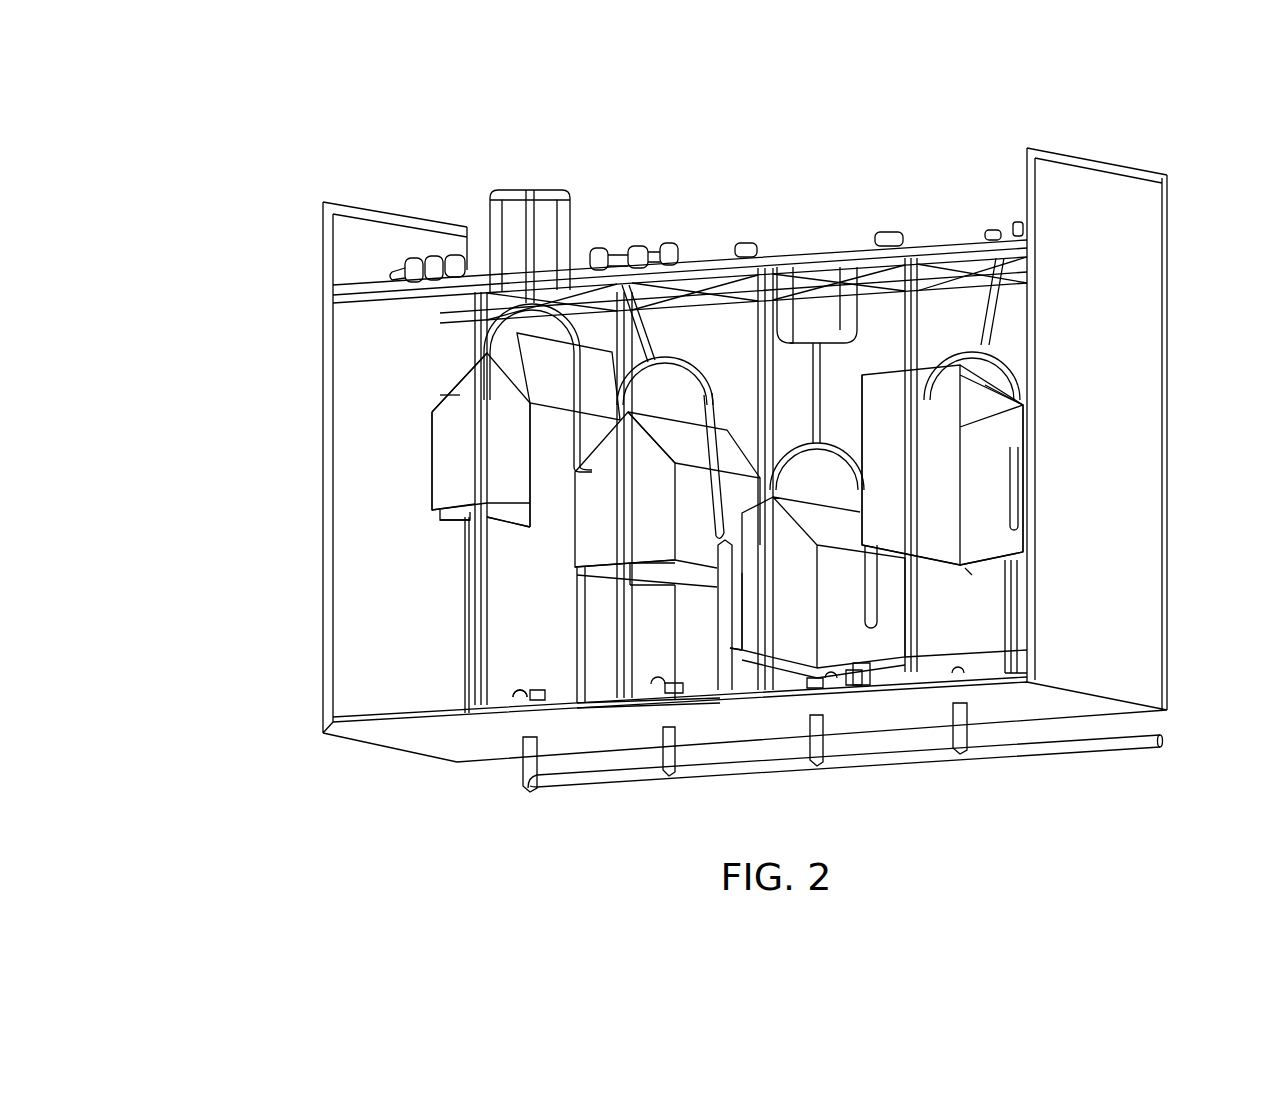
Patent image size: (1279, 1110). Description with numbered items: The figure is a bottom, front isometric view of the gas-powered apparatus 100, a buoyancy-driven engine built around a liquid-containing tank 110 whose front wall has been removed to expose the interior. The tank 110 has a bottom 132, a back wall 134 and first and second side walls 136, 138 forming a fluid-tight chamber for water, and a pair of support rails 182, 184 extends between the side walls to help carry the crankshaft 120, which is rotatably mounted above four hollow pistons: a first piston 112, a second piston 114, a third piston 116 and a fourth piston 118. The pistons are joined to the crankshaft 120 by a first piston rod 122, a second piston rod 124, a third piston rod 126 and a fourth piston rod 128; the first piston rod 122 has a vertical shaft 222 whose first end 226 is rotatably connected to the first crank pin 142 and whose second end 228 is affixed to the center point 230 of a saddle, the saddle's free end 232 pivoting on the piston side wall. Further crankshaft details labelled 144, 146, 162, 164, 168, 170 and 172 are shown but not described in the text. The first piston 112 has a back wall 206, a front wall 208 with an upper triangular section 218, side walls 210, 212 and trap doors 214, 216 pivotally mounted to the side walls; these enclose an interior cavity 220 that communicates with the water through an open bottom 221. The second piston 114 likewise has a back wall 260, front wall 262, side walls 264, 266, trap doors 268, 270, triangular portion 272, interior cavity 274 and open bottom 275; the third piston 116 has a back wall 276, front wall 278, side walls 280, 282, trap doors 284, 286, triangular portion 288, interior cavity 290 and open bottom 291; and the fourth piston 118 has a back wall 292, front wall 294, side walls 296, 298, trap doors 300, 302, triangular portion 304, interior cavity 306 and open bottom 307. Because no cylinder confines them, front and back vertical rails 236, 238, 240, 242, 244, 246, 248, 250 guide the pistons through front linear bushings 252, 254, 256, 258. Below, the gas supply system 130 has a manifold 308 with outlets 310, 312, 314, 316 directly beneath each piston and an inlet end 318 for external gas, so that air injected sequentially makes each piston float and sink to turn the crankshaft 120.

The gas-powered apparatus 100 is at (958, 93).
The tank 110 is at (318, 266).
The first piston 112 is at (425, 448).
The second piston 114 is at (593, 570).
The third piston 116 is at (884, 676).
The fourth piston 118 is at (1010, 535).
The crankshaft 120 is at (580, 212).
The first piston rod 122 is at (520, 248).
The second piston rod 124 is at (665, 358).
The third piston rod 126 is at (895, 380).
The fourth piston rod 128 is at (985, 308).
The gas supply system 130 is at (582, 790).
The bottom 132 is at (363, 738).
The back wall 134 is at (503, 698).
The first side wall 136 is at (318, 706).
The second side wall 138 is at (1166, 648).
The first crank pin 142 is at (505, 188).
The roller 144 is at (645, 252).
The bracket leg 146 is at (820, 320).
The bracket leg 162 is at (488, 208).
The bracket leg 164 is at (570, 243).
The roller 168 is at (690, 255).
The bracket leg 170 is at (805, 290).
The hanger rod 172 is at (832, 423).
The support rail 182 is at (945, 292).
The support rail 184 is at (375, 290).
The back wall 206 is at (573, 548).
The front wall 208 is at (437, 498).
The side wall 210 is at (442, 492).
The side wall 212 is at (530, 470).
The trap door 214 is at (457, 349).
The trap door 216 is at (480, 347).
The upper triangular section 218 is at (462, 388).
The interior cavity 220 is at (462, 518).
The open bottom 221 is at (443, 518).
The shaft 222 is at (533, 217).
The first end 226 is at (541, 188).
The second end 228 is at (575, 222).
The center point 230 is at (547, 355).
The free end 232 is at (425, 428).
The vertical rail 236 is at (465, 673).
The vertical rail 238 is at (570, 663).
The vertical rail 240 is at (643, 640).
The vertical rail 242 is at (710, 677).
The vertical rail 244 is at (753, 680).
The vertical rail 246 is at (915, 660).
The vertical rail 248 is at (887, 638).
The vertical rail 250 is at (1010, 640).
The front linear bushing 252 is at (483, 520).
The front linear bushing 254 is at (632, 514).
The front linear bushing 256 is at (773, 627).
The front linear bushing 258 is at (917, 492).
The back wall 260 is at (752, 300).
The front wall 262 is at (585, 555).
The side wall 264 is at (573, 617).
The side wall 266 is at (703, 484).
The trap door 268 is at (623, 415).
The trap door 270 is at (658, 428).
The triangular portion 272 is at (655, 452).
The interior cavity 274 is at (627, 620).
The open bottom 275 is at (640, 570).
The back wall 276 is at (893, 587).
The front wall 278 is at (718, 676).
The side wall 280 is at (840, 560).
The side wall 282 is at (717, 560).
The trap door 284 is at (807, 510).
The trap door 286 is at (748, 560).
The triangular portion 288 is at (793, 567).
The interior cavity 290 is at (800, 655).
The open bottom 291 is at (850, 677).
The back wall 292 is at (977, 552).
The front wall 294 is at (937, 508).
The side wall 296 is at (850, 487).
The side wall 298 is at (990, 468).
The trap door 300 is at (885, 388).
The trap door 302 is at (985, 425).
The triangular portion 304 is at (1010, 407).
The interior cavity 306 is at (972, 570).
The open bottom 307 is at (997, 557).
The manifold 308 is at (1070, 753).
The outlet 310 is at (520, 695).
The outlet 312 is at (658, 683).
The outlet 314 is at (833, 680).
The outlet 316 is at (980, 658).
The inlet end 318 is at (1165, 745).